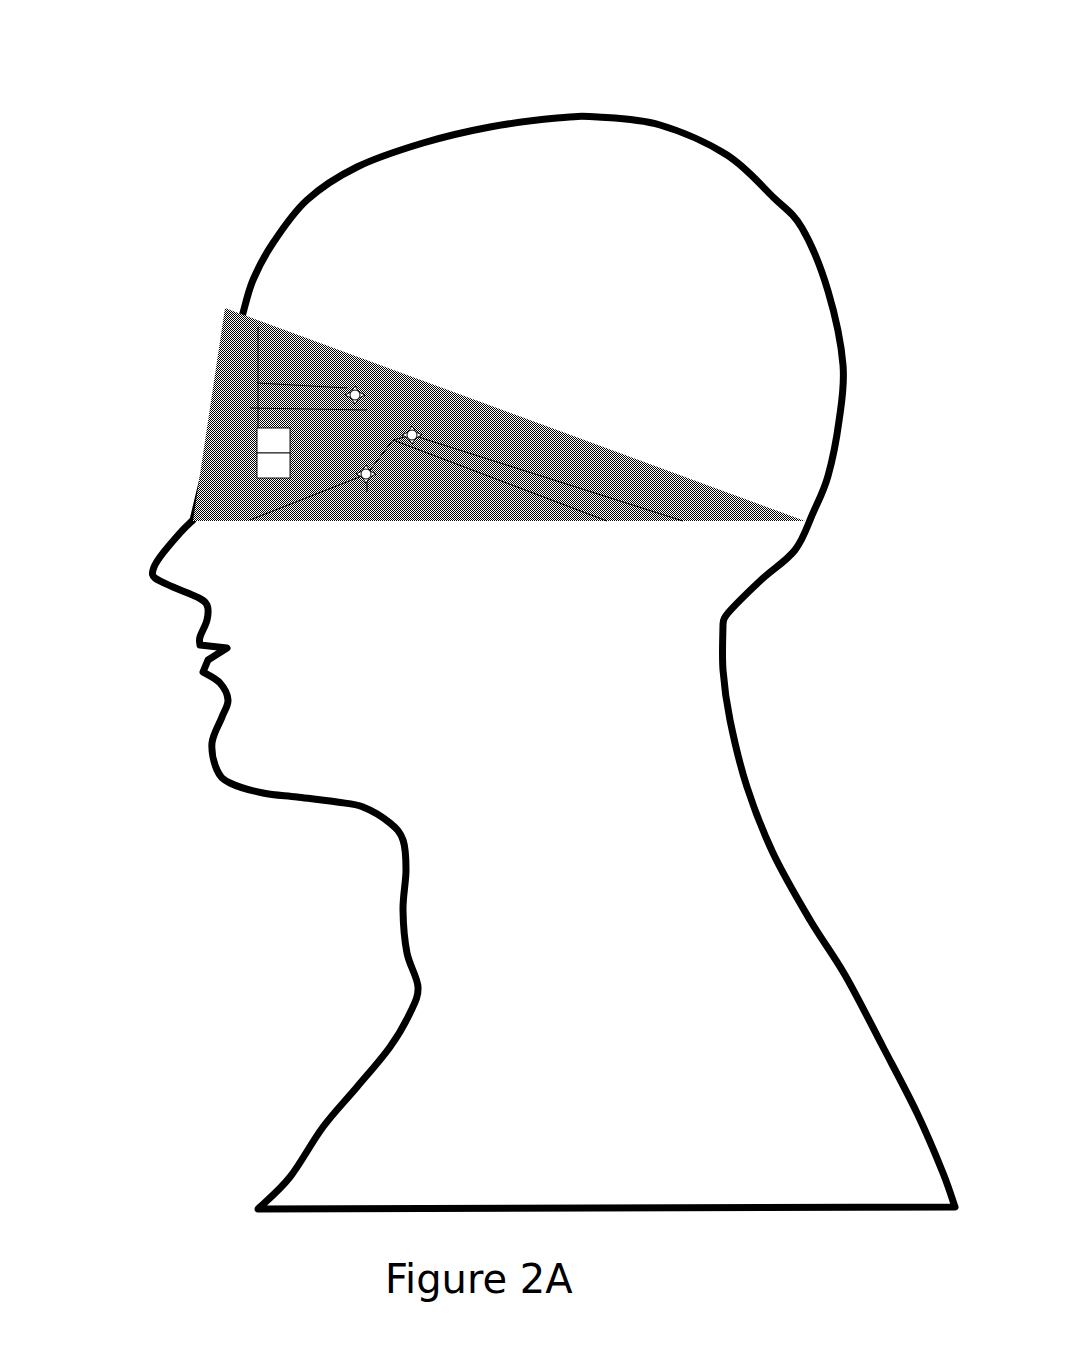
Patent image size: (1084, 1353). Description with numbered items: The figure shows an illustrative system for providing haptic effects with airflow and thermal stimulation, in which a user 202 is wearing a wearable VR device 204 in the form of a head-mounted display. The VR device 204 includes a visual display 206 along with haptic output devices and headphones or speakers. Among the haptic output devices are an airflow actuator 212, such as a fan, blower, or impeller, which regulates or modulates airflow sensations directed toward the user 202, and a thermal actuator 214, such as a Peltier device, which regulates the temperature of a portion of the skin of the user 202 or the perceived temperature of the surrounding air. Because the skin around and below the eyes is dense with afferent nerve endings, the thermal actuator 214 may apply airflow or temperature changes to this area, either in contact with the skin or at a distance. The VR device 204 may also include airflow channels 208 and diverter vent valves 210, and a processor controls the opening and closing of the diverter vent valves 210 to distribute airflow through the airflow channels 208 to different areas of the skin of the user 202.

The user 202 is at (598, 117).
The wearable VR device 204 is at (345, 350).
The visual display 206 is at (247, 350).
The airflow channels 208 is at (330, 507).
The diverter vent valves 210 is at (366, 465).
The airflow actuator 212 is at (270, 445).
The thermal actuator 214 is at (270, 473).